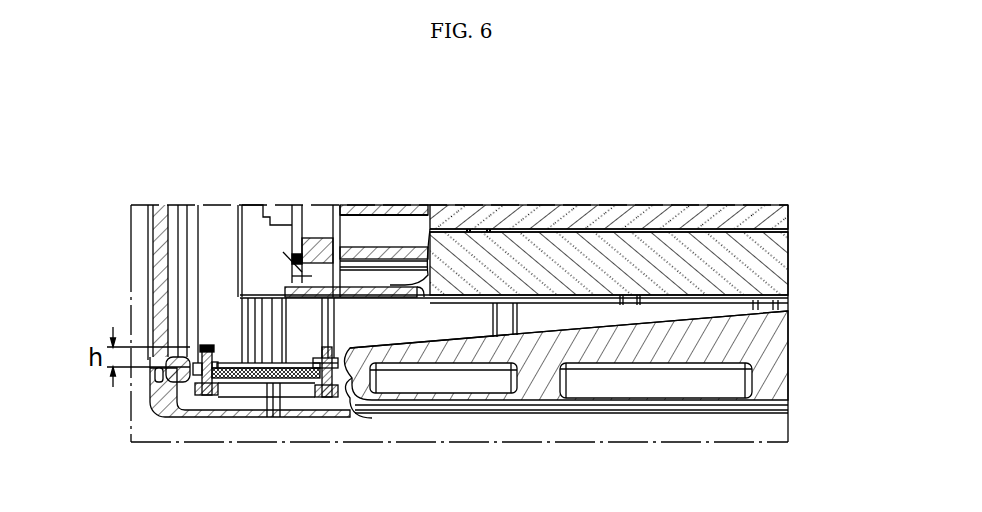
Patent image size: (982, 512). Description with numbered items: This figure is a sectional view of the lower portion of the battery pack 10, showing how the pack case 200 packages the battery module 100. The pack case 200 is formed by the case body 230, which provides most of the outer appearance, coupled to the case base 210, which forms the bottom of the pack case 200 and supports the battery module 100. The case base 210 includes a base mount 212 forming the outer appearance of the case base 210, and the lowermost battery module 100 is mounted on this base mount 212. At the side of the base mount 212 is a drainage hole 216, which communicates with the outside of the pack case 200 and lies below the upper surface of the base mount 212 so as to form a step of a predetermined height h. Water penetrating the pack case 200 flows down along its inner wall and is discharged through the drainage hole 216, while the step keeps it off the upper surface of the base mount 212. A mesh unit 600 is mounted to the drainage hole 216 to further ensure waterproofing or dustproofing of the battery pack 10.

The battery pack 10 is at (459, 259).
The battery module 100 is at (803, 253).
The pack case 200 is at (146, 428).
The case base 210 is at (804, 369).
The base mount 212 is at (780, 320).
The drainage hole 216 is at (205, 397).
The case body 230 is at (126, 293).
The mesh unit 600 is at (263, 402).